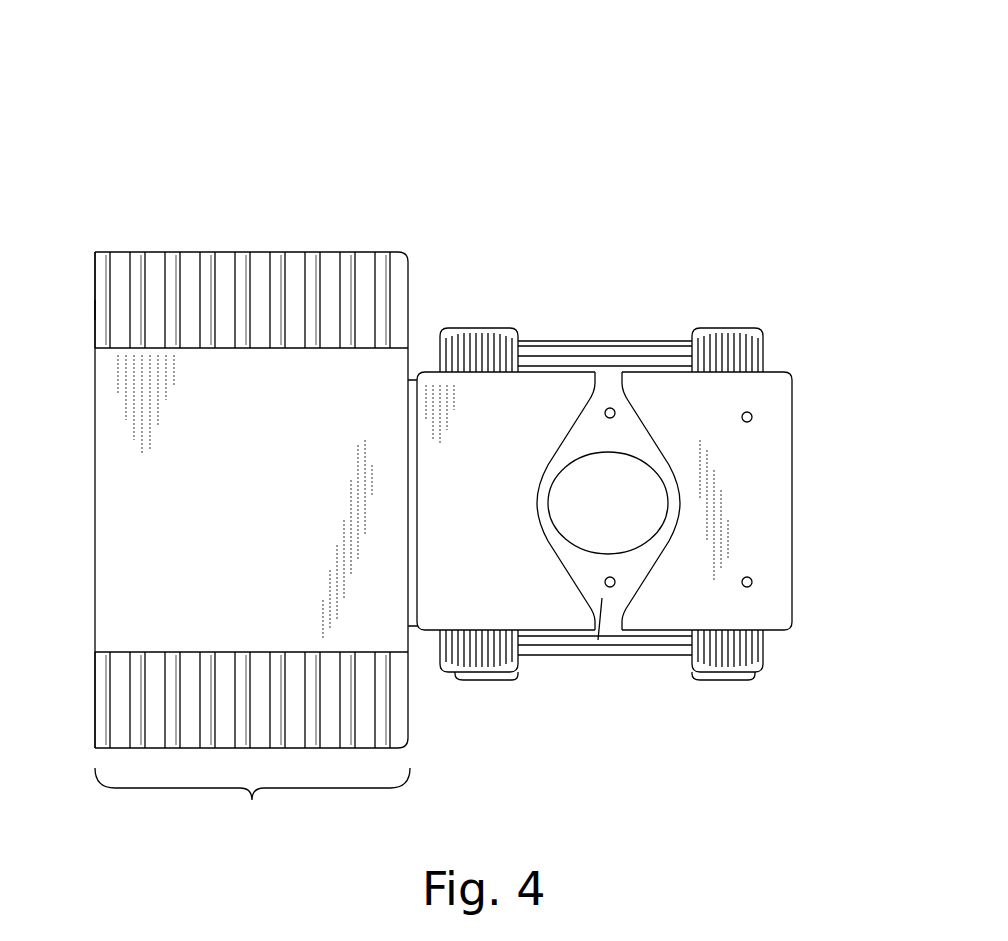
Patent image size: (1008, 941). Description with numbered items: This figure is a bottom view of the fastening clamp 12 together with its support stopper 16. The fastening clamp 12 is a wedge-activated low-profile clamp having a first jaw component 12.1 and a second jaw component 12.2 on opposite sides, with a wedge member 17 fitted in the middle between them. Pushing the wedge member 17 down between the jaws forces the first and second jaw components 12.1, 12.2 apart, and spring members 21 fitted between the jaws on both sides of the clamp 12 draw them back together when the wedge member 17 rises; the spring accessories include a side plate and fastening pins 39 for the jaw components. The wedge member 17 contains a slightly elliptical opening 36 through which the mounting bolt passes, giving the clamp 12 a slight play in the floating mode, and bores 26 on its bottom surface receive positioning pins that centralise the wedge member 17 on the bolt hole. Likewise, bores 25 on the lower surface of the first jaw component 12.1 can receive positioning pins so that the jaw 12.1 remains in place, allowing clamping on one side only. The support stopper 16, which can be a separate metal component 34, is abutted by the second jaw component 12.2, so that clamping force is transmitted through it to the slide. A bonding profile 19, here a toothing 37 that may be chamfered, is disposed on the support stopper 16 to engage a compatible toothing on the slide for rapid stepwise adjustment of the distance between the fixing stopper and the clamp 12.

The fastening clamp 12 is at (582, 203).
The first jaw component 12.1 is at (707, 501).
The second jaw component 12.2 is at (501, 501).
The support stopper 16 is at (275, 137).
The wedge member 17 is at (602, 598).
The bonding profile 19 is at (86, 309).
The spring members 21 is at (770, 345).
The bores 25 is at (752, 414).
The bores 26 is at (609, 407).
The metal component 34 is at (251, 500).
The opening 36 is at (608, 501).
The toothing 37 is at (252, 806).
The fastening pins 39 is at (495, 328).